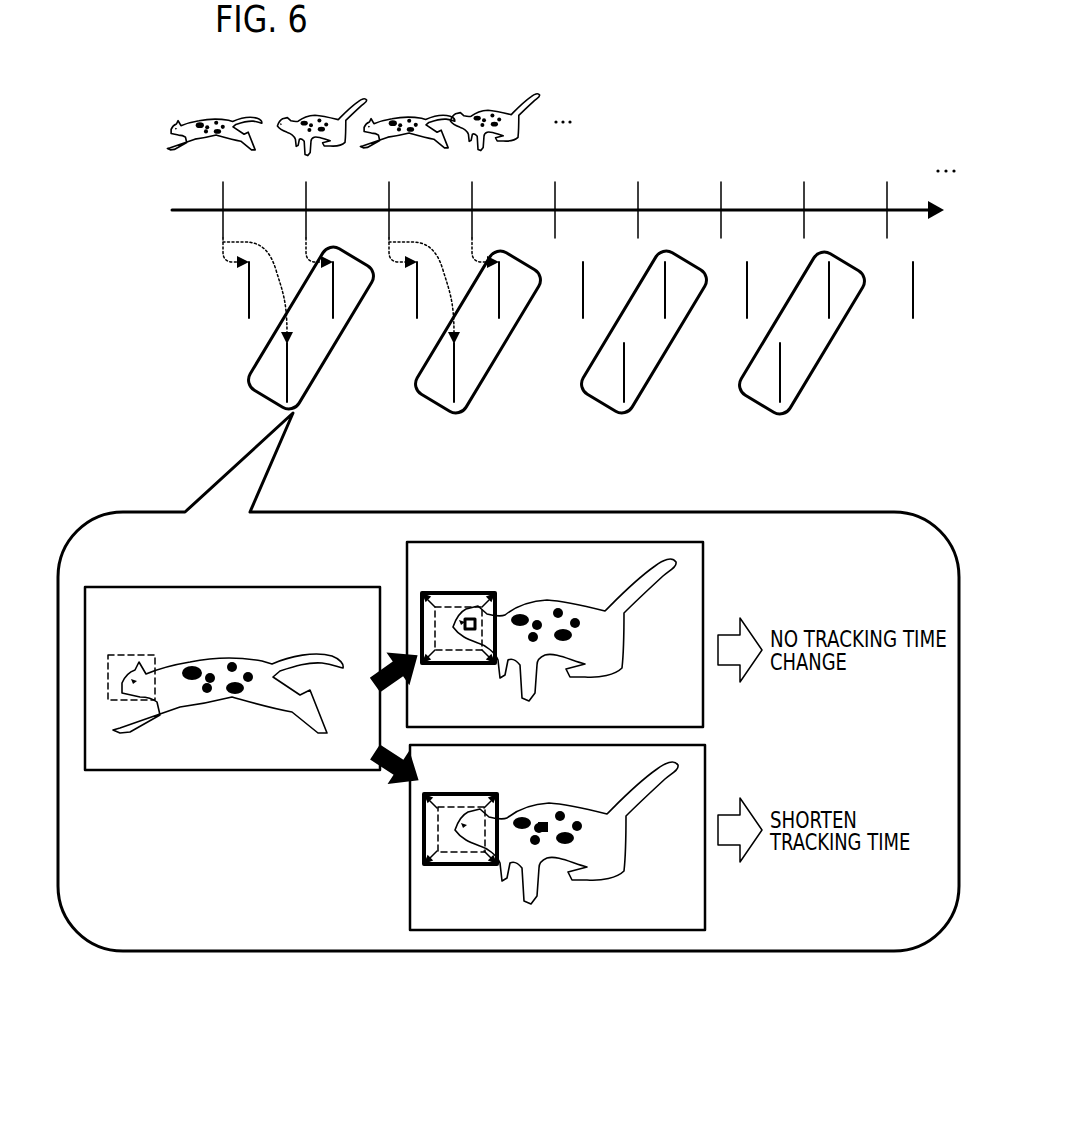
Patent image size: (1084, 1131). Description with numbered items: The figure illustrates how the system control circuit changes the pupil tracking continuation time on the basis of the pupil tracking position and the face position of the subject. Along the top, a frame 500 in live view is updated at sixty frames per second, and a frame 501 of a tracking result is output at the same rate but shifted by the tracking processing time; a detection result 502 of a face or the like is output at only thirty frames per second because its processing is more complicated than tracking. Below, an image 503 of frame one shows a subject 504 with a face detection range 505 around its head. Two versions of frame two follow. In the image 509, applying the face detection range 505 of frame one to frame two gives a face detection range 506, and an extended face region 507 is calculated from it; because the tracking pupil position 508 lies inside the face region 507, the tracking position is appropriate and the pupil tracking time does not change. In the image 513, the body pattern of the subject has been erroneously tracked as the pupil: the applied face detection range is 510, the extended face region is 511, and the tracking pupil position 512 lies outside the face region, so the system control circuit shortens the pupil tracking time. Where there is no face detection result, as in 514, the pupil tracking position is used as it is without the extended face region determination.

The frame in live view 500 is at (693, 153).
The frame of a tracking result 501 is at (113, 271).
The detection result 502 is at (120, 388).
The image of a frame 1 503 is at (217, 587).
The subject 504 is at (257, 657).
The face detection range 505 is at (155, 683).
The face detection range 506 is at (458, 650).
The extended face region 507 is at (452, 593).
The tracking pupil position 508 is at (477, 623).
The image 509 is at (703, 573).
The face detection range applied to frame 2 510 is at (457, 852).
The extended face region 511 is at (458, 793).
The tracking pupil position 512 is at (543, 822).
The image 513 is at (705, 787).
The no face detection result 514 is at (477, 390).